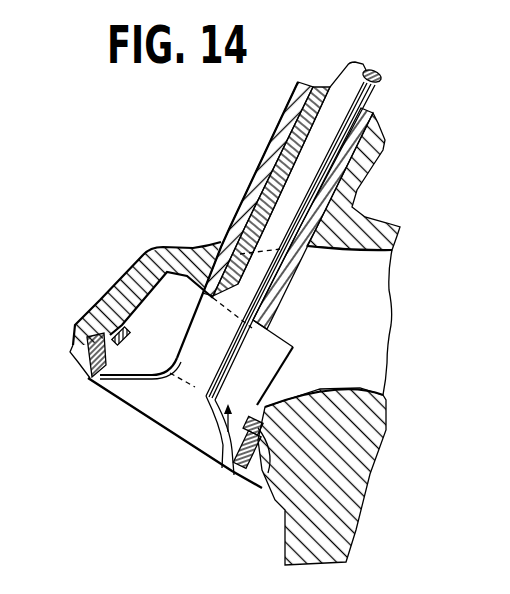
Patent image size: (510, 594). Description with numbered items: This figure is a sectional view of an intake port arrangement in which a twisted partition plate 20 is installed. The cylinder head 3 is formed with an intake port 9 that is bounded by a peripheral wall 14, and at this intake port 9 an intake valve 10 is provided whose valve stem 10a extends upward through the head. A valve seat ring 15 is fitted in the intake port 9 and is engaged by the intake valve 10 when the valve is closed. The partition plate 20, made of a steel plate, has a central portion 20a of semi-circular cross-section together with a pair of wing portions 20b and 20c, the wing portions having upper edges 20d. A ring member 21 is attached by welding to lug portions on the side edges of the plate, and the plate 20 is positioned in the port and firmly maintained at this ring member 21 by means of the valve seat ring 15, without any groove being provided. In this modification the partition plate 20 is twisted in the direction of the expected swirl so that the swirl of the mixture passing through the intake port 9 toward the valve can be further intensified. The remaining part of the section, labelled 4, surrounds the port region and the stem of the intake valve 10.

The cylinder head 3 is at (355, 465).
The housing member 4 is at (372, 266).
The intake port 9 is at (230, 473).
The intake valve 10 is at (133, 397).
The valve stem 10a is at (353, 93).
The peripheral wall 14 is at (258, 468).
The valve seat ring 15 is at (86, 353).
The partition plate 20 is at (167, 285).
The central portion 20a is at (199, 262).
The wing portion 20b is at (267, 347).
The wing portion 20c is at (157, 298).
The upper edges 20d is at (277, 317).
The ring member 21 is at (106, 328).